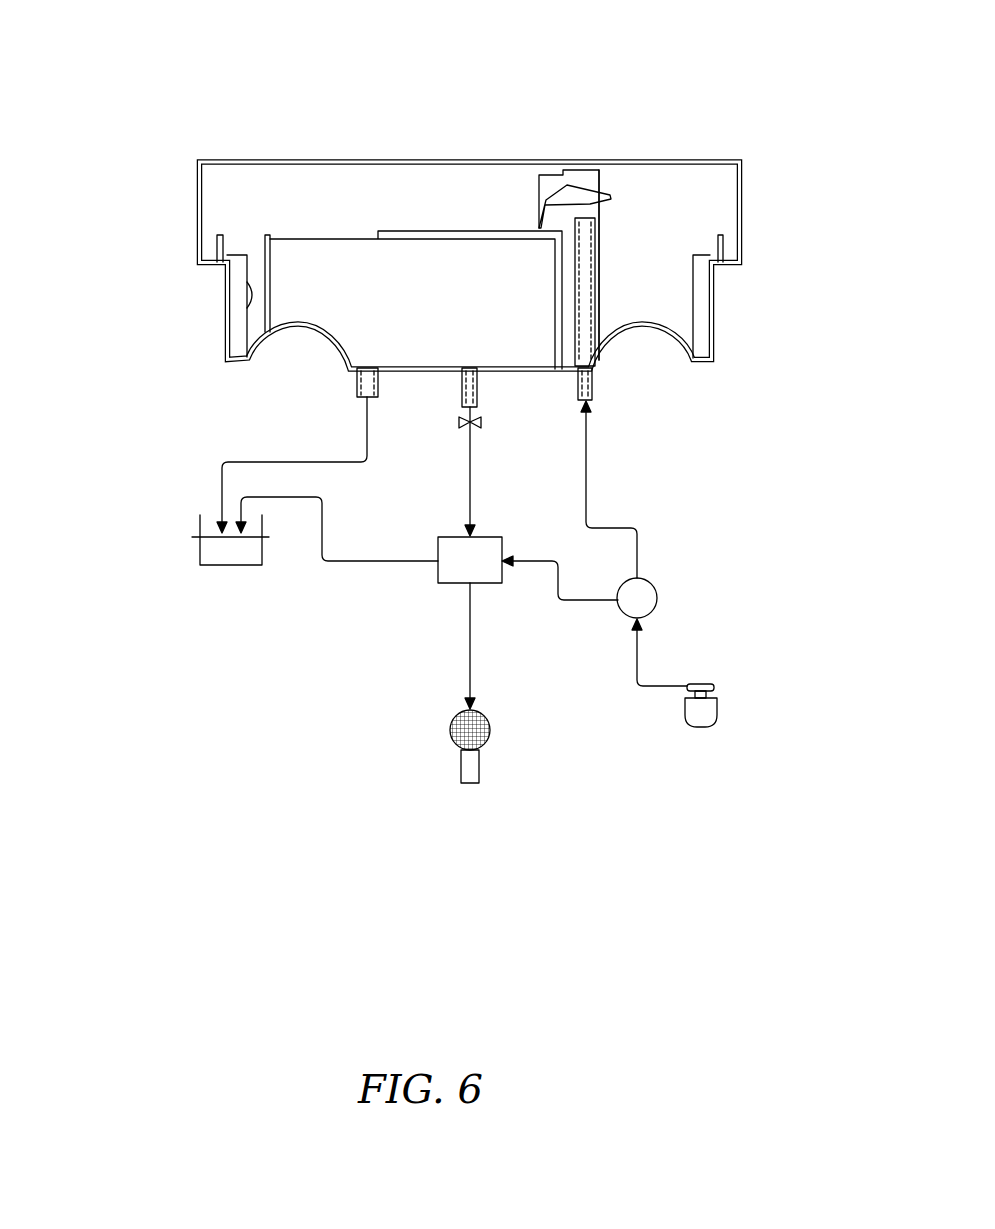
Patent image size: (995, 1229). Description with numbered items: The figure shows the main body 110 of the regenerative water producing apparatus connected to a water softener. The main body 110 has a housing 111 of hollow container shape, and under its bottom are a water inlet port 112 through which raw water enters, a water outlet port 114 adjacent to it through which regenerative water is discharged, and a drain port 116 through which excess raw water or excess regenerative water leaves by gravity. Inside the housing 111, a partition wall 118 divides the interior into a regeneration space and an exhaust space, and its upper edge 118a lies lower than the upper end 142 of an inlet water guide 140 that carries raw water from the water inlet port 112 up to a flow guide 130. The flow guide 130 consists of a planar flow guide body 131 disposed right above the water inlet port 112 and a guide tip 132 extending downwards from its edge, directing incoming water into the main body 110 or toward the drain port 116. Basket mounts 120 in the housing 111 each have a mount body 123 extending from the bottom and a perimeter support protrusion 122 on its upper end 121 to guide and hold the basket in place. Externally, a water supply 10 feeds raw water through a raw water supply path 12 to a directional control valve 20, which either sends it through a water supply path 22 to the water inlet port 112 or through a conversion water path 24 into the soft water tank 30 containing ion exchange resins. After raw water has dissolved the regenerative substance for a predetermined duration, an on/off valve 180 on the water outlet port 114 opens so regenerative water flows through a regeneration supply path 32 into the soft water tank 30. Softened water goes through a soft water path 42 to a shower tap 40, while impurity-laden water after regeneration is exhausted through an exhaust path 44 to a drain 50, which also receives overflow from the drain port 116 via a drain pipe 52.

The main body 110 is at (439, 225).
The housing 111 is at (743, 186).
The water inlet port 112 is at (592, 388).
The water outlet port 114 is at (477, 388).
The drain port 116 is at (357, 382).
The partition wall 118 is at (293, 255).
The upper edge of the partition wall 118a is at (333, 238).
The basket mount 120 is at (439, 274).
The upper end of the mount body 121 is at (231, 252).
The perimeter support protrusion 122 is at (217, 242).
The mount body 123 is at (240, 308).
The flow guide 130 is at (561, 188).
The flow guide body 131 is at (583, 218).
The guide tip 132 is at (545, 205).
The inlet water guide 140 is at (615, 300).
The upper end of the inlet water guide 142 is at (607, 215).
The on/off valve 180 is at (448, 427).
The water supply 10 is at (701, 728).
The raw water supply path 12 is at (640, 662).
The directional control valve 20 is at (652, 583).
The water supply path 22 is at (613, 527).
The conversion water path 24 is at (533, 560).
The soft water tank 30 is at (487, 585).
The regeneration supply path 32 is at (470, 493).
The shower tap 40 is at (436, 734).
The soft water path 42 is at (470, 668).
The exhaust path 44 is at (343, 562).
The drain 50 is at (200, 555).
The drain pipe 52 is at (262, 461).